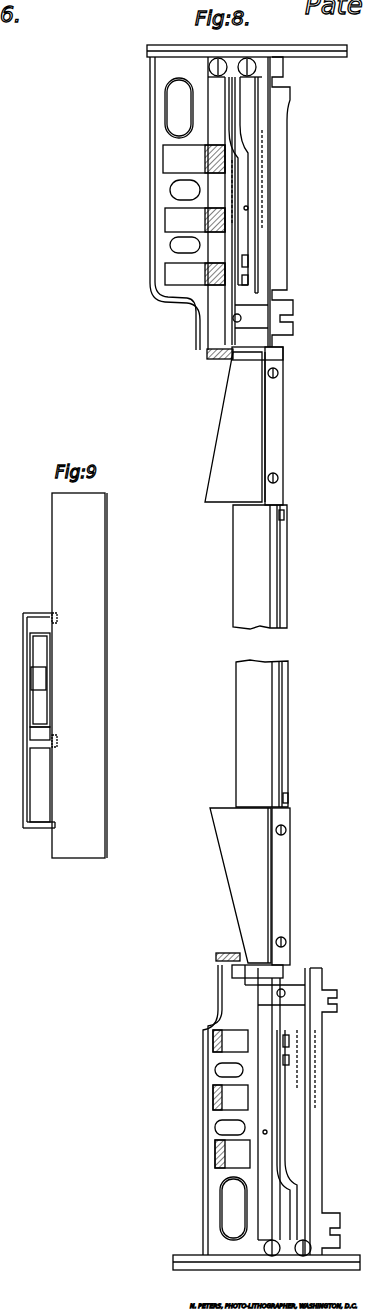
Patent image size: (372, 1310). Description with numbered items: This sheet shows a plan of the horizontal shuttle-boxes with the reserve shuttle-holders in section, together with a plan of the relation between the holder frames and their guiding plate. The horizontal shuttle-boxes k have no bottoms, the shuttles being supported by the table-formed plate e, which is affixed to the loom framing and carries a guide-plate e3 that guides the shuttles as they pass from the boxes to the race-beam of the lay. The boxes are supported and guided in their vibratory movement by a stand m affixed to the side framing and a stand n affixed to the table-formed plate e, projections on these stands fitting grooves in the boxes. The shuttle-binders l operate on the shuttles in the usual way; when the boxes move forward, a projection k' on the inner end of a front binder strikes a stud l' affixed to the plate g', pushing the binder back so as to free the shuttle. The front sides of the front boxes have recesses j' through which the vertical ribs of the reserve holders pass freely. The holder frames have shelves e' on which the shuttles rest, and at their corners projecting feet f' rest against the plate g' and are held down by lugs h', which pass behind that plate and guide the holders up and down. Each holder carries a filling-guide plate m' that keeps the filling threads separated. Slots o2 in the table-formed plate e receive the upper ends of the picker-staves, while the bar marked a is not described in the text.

In FIG. 8, the stand m is at (247, 44).
In FIG. 8, the horizontal shuttle-box k is at (184, 108).
In FIG. 8, the recess j' is at (194, 215).
In FIG. 8, the stud l' is at (215, 159).
In FIG. 8, the shelf e' is at (195, 246).
In FIG. 9, the shelf e' is at (38, 678).
In FIG. 8, the shuttle-binder l is at (246, 181).
In FIG. 8, the slot o2 is at (247, 199).
In FIG. 8, the projection k' is at (249, 270).
In FIG. 8, the table-formed plate e is at (282, 202).
In FIG. 8, the stand n is at (245, 332).
In FIG. 8, the guide-plate e3 is at (244, 426).
In FIG. 8, the needle bar a is at (260, 656).
In FIG. 9, the plate g' is at (79, 675).
In FIG. 9, the lug h' is at (40, 712).
In FIG. 9, the projecting foot f' is at (40, 684).
In FIG. 9, the filling-guide plate m' is at (40, 794).